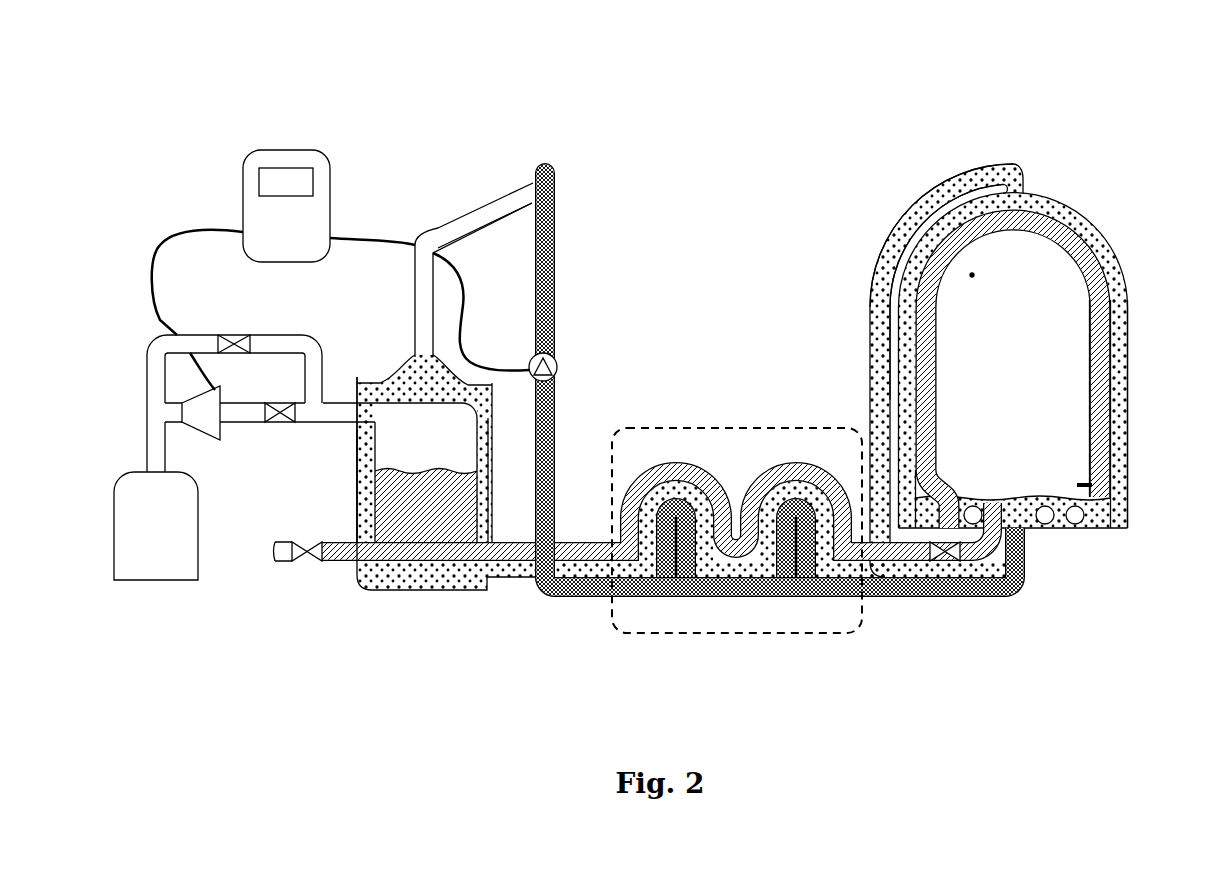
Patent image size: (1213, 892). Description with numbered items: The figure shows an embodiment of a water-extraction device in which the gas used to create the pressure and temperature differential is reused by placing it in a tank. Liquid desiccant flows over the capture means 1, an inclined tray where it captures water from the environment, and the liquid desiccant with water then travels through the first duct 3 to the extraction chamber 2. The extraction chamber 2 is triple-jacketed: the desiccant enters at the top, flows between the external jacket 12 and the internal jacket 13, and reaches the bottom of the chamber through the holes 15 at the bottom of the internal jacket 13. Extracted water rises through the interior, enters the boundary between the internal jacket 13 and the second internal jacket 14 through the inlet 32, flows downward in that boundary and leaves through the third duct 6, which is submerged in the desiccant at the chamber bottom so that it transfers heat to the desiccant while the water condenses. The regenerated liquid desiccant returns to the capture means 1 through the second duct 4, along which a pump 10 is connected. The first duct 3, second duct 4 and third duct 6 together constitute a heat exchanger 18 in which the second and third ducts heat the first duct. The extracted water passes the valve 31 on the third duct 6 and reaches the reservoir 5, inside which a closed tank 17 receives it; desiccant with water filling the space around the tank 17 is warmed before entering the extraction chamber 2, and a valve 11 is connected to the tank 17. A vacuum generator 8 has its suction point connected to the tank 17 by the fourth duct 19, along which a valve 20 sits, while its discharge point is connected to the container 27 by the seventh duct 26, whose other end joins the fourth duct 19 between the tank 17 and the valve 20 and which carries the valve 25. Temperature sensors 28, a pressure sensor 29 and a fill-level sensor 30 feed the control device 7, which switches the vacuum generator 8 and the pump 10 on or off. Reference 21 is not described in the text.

The capture means 1 is at (476, 212).
The extraction chamber 2 is at (885, 131).
The first duct 3 is at (415, 290).
The second duct 4 is at (553, 245).
The reservoir 5 is at (357, 490).
The third duct 6 is at (500, 540).
The control device 7 is at (280, 150).
The vacuum generator 8 is at (220, 440).
The pump 10 is at (558, 367).
The valve 11 is at (303, 562).
The external jacket 12 is at (1125, 455).
The internal jacket 13 is at (1109, 410).
The second internal jacket 14 is at (1092, 370).
The holes 15 is at (920, 517).
The tank 17 is at (382, 437).
The heat exchanger 18 is at (765, 428).
The fourth duct 19 is at (335, 400).
The valve 20 is at (280, 422).
The pipe 21 is at (245, 403).
The valve 25 is at (232, 335).
The seventh duct 26 is at (147, 438).
The container 27 is at (152, 580).
The temperature sensors 28 is at (412, 435).
The pressure sensor 29 is at (975, 276).
The fill-level sensor 30 is at (1092, 485).
The valve 31 is at (960, 598).
The inlet 32 is at (1010, 225).